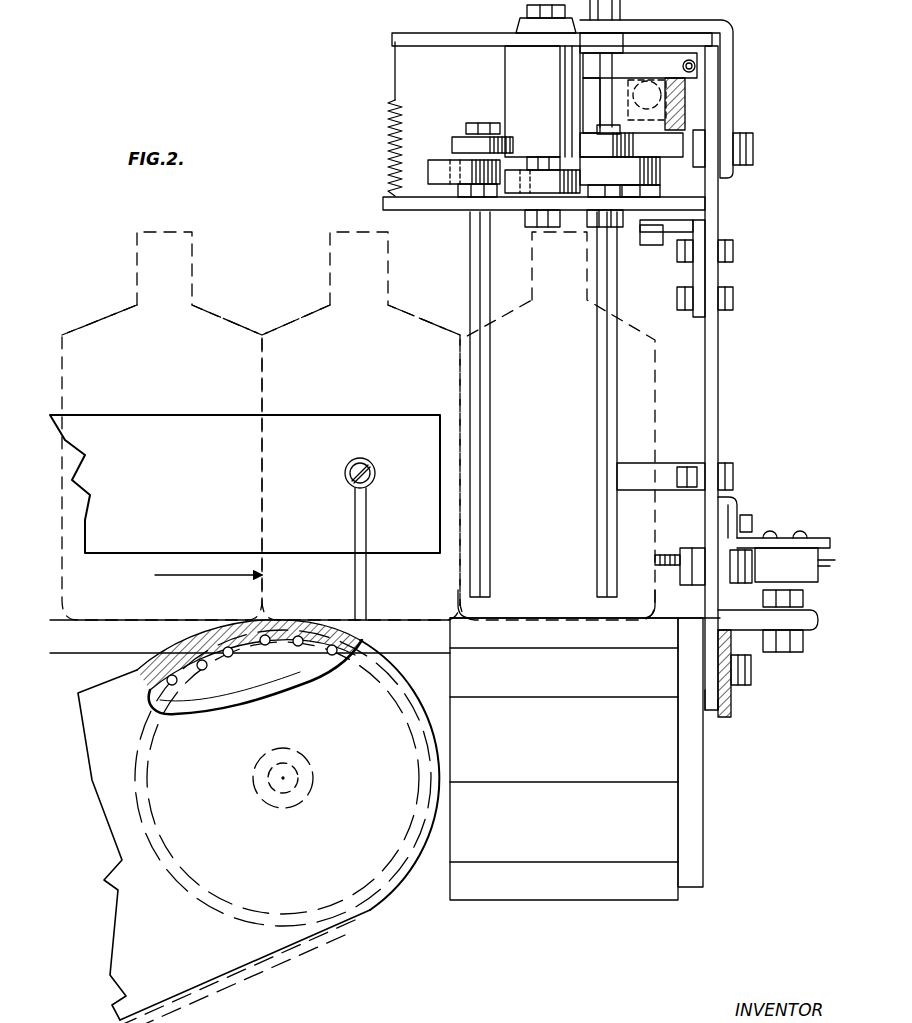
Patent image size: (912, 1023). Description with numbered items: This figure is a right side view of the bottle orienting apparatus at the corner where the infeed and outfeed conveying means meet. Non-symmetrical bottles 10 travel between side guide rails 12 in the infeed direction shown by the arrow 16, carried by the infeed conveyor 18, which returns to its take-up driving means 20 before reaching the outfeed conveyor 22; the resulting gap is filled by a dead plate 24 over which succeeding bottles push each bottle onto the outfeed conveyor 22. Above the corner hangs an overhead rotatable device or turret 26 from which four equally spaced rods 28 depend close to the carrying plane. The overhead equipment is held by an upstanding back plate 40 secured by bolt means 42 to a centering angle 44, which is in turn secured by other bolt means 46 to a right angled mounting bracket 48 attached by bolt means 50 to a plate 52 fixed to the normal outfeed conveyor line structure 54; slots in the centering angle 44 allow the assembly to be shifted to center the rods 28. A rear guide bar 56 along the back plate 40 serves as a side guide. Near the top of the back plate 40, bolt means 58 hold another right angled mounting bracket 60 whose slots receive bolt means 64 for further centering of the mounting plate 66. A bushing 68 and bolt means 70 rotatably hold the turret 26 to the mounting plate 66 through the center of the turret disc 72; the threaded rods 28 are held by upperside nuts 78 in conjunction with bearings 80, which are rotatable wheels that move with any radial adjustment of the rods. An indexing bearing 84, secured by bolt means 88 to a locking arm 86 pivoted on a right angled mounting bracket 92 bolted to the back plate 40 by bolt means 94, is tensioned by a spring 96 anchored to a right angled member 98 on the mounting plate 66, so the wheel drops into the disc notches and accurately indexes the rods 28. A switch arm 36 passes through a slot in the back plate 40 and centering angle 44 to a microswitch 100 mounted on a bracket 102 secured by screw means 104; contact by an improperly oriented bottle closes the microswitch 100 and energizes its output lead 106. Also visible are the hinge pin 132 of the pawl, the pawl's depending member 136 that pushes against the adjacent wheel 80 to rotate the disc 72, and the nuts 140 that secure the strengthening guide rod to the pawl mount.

The bottle 10 is at (270, 322).
The side guide rails 12 is at (132, 553).
The arrow 16 is at (188, 578).
The infeed conveyor 18 is at (148, 620).
The take-up driving means 20 is at (371, 912).
The outfeed conveyor 22 is at (663, 768).
The dead plate 24 is at (426, 628).
The turret 26 is at (498, 90).
The rods 28 is at (470, 300).
The switch arm 36 is at (672, 555).
The back plate 40 is at (718, 403).
The bolt means 42 is at (700, 585).
The centering angle 44 is at (733, 497).
The bolt means 46 is at (780, 652).
The right angled mounting bracket 48 is at (742, 680).
The bolt means 50 is at (741, 685).
The plate 52 is at (707, 713).
The outfeed conveyor line structure 54 is at (703, 888).
The rear guide bar 56 is at (661, 470).
The bolt means 58 is at (753, 160).
The right angled mounting bracket 60 is at (733, 42).
The bolt means 64 is at (622, 10).
The mounting plate 66 is at (482, 33).
The bushing 68 is at (505, 76).
The bolt means 70 is at (527, 14).
The turret disc 72 is at (430, 168).
The upperside nuts 78 is at (482, 123).
The bearings 80 is at (451, 137).
The bearing 84 is at (520, 195).
The locking arm 86 is at (437, 210).
The bolt means 88 is at (530, 228).
The right angled mounting bracket 92 is at (700, 320).
The bolt means 94 is at (733, 298).
The spring 96 is at (388, 130).
The right angled member 98 is at (392, 58).
The microswitch 100 is at (785, 548).
The bracket 102 is at (830, 537).
The screw means 104 is at (750, 520).
The output lead 106 is at (822, 582).
The pin or bolt 132 is at (685, 96).
The depending member 136 is at (675, 160).
The nuts 140 is at (697, 66).